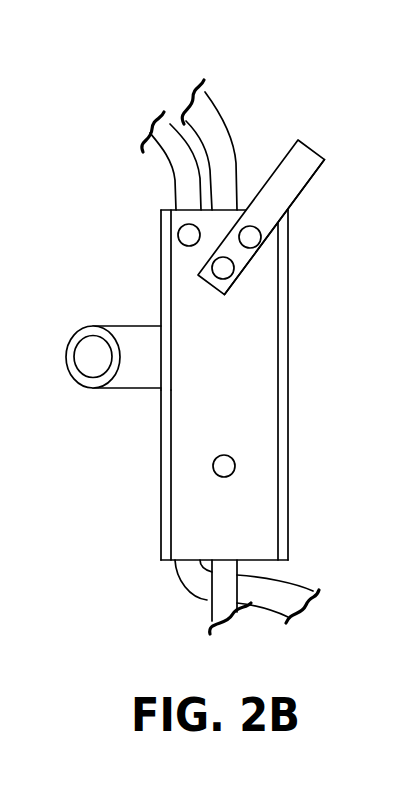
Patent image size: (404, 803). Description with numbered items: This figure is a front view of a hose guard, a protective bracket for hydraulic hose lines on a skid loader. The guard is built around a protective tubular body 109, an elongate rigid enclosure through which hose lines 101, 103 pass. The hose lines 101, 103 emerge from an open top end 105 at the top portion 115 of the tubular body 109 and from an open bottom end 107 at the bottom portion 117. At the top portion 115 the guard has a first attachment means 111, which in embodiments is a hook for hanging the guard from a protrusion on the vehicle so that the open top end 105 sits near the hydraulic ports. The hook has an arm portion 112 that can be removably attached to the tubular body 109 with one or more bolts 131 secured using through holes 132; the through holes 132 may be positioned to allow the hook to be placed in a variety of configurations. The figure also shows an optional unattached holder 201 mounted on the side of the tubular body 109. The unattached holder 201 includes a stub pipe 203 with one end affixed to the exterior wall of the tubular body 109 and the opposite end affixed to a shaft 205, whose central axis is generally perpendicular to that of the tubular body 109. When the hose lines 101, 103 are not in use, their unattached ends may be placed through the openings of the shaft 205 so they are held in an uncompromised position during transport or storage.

The hose line 101 is at (226, 121).
The hose line 103 is at (172, 119).
The open top end 105 is at (172, 209).
The open bottom end 107 is at (282, 561).
The tubular body 109 is at (289, 413).
The first attachment means 111 is at (313, 147).
The arm portion 112 is at (292, 170).
The top portion 115 is at (160, 272).
The bottom portion 117 is at (160, 535).
The bolt 131 is at (234, 271).
The through hole 132 is at (188, 247).
The unattached holder 201 is at (66, 368).
The stub pipe 203 is at (138, 390).
The shaft 205 is at (66, 348).